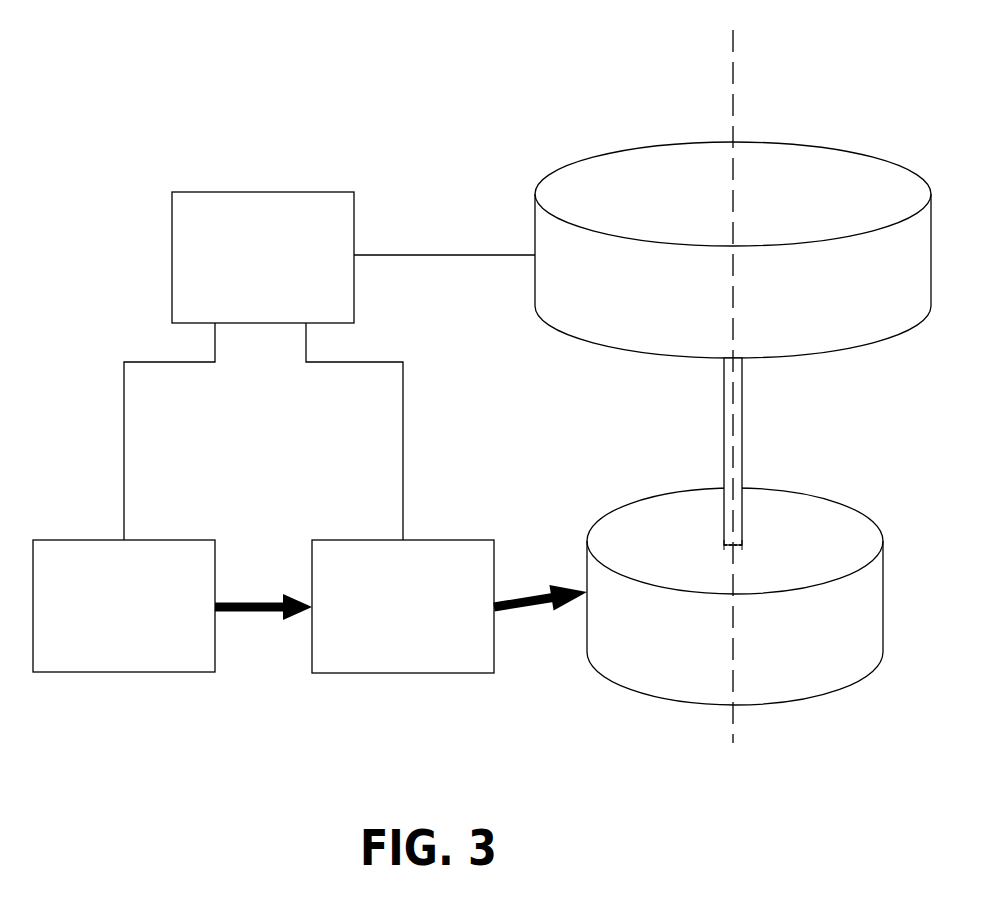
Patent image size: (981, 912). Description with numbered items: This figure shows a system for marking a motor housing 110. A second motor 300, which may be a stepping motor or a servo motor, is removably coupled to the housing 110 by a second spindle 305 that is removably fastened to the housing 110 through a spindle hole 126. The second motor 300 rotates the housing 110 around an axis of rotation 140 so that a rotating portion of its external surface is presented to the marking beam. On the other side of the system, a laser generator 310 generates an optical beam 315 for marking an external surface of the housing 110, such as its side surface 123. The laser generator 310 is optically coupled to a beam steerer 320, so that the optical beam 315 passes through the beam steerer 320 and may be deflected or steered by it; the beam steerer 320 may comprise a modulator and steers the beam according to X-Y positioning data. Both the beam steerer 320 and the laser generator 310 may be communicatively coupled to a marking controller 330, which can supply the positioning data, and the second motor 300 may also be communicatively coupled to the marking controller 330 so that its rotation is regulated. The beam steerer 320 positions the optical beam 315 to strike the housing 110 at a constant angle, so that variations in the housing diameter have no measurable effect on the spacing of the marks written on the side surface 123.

The housing 110 is at (722, 590).
The side surface 123 is at (790, 668).
The spindle hole 126 is at (742, 546).
The axis of rotation 140 is at (733, 77).
The second motor 300 is at (608, 152).
The second spindle 305 is at (742, 458).
The laser generator 310 is at (108, 615).
The optical beam 315 is at (258, 613).
The beam steerer 320 is at (388, 615).
The marking controller 330 is at (248, 266).